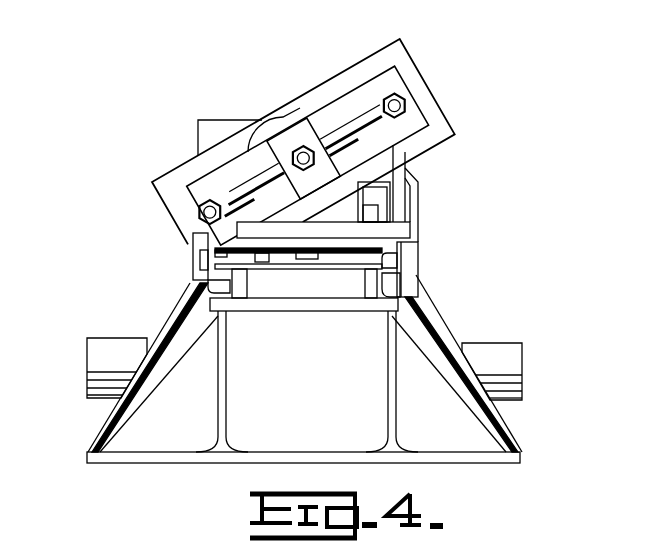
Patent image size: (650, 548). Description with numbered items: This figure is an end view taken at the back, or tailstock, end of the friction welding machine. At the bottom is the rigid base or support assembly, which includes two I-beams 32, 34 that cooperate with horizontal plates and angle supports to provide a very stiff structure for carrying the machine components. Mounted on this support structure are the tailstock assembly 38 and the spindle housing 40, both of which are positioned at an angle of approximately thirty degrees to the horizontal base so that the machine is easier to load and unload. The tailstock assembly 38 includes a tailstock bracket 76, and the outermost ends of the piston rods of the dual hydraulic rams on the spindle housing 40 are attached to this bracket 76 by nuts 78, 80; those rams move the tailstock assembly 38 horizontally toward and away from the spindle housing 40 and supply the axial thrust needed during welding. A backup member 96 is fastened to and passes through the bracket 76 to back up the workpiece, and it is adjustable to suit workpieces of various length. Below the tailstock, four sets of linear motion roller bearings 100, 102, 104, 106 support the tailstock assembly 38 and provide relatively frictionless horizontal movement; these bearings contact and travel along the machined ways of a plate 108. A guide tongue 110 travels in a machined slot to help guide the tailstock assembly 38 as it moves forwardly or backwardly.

The I-beam 32 is at (388, 388).
The I-beam 34 is at (225, 394).
The tailstock assembly 38 is at (452, 188).
The spindle housing assembly 40 is at (160, 184).
The tailstock bracket 76 is at (413, 67).
The nut 78 is at (199, 213).
The nut 80 is at (406, 106).
The backup member 96 is at (300, 147).
The linear motion roller bearing 100 is at (194, 256).
The linear motion roller bearing 102 is at (208, 284).
The linear motion roller bearing 104 is at (398, 258).
The linear motion roller bearing 106 is at (401, 285).
The plate 108 is at (262, 265).
The guide tongue 110 is at (303, 259).